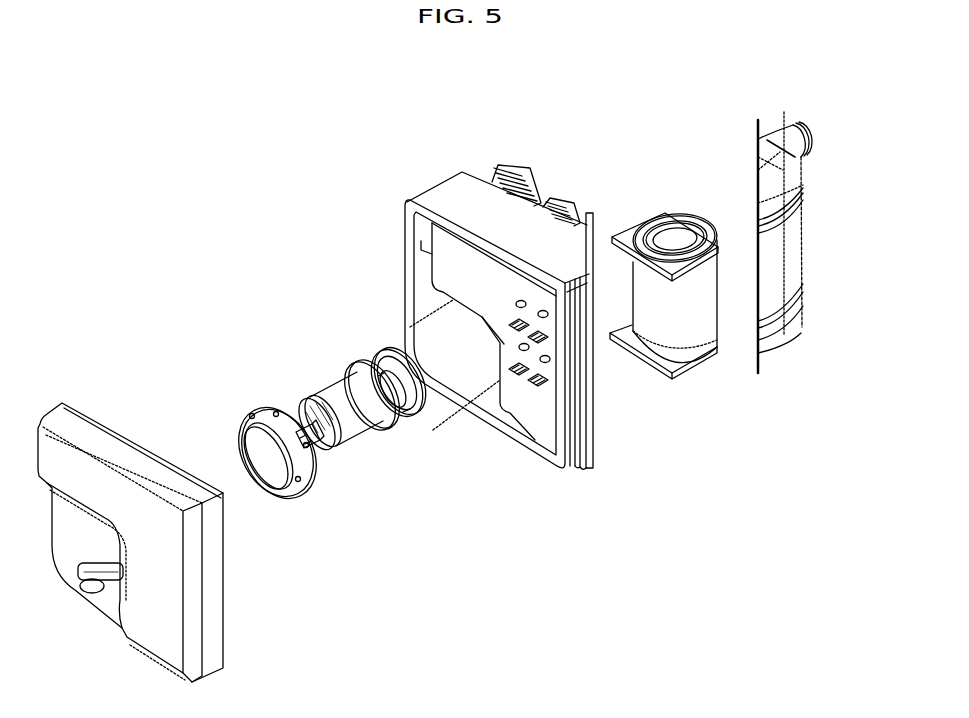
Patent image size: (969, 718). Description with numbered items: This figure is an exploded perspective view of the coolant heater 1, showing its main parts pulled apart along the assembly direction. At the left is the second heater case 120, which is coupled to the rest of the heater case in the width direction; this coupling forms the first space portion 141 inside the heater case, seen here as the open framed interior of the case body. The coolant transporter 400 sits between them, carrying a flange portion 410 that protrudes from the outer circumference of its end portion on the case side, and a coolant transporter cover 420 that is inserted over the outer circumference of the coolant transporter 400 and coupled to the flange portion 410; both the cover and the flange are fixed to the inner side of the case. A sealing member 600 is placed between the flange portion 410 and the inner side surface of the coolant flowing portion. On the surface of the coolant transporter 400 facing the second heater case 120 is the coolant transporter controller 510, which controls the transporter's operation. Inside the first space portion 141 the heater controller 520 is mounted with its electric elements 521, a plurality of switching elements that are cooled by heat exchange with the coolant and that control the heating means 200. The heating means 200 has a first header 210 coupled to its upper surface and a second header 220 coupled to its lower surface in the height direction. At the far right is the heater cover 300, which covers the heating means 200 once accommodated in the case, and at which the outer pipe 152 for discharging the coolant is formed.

The coolant heater 1 is at (318, 183).
The second heater case 120 is at (87, 416).
The first space portion 141 is at (463, 357).
The outer pipe 152 is at (785, 132).
The heating means 200 is at (655, 340).
The first header 210 is at (670, 213).
The second header 220 is at (700, 372).
The heater cover 300 is at (803, 230).
The coolant transporter 400 is at (333, 384).
The flange portion 410 is at (355, 363).
The coolant transporter cover 420 is at (258, 410).
The coolant transporter controller 510 is at (330, 452).
The heater controller 520 is at (538, 405).
The electric elements 521 is at (596, 440).
The sealing member 600 is at (410, 418).